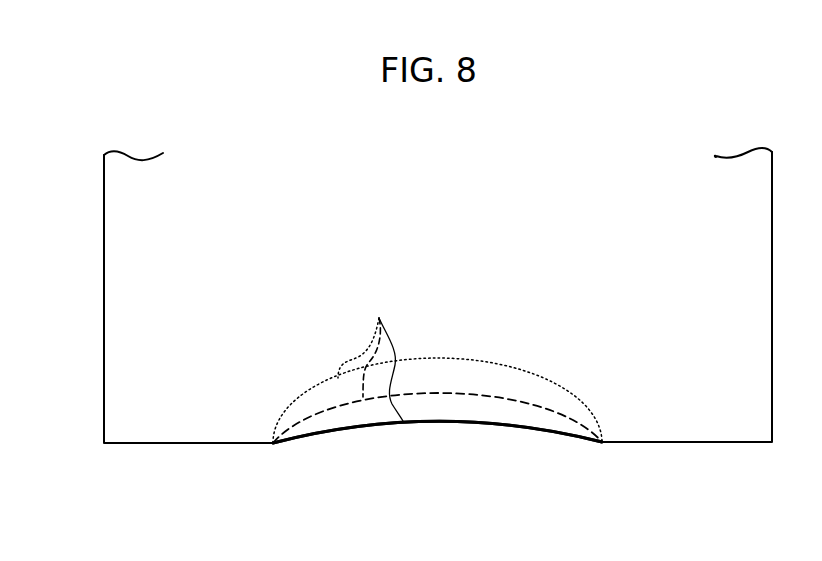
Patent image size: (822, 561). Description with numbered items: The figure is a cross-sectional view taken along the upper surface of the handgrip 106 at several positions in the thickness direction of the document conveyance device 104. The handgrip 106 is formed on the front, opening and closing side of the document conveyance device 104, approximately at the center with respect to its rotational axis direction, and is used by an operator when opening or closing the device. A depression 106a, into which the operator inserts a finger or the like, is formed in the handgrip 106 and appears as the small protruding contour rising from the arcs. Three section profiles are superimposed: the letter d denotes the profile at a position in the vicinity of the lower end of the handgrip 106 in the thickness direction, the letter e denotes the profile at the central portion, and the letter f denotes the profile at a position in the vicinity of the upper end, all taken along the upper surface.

The document conveyance device 104 is at (115, 274).
The handgrip 106 is at (378, 429).
The depression 106a is at (370, 354).
The position in the vicinity of a lower end of the handgrip d is at (447, 361).
The central portion e is at (452, 393).
The position in the vicinity of the upper end f is at (445, 421).